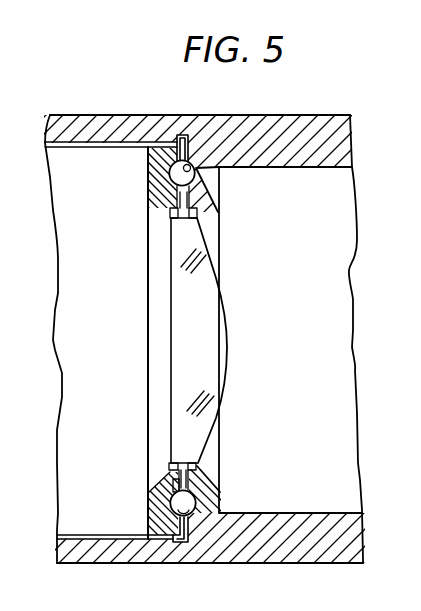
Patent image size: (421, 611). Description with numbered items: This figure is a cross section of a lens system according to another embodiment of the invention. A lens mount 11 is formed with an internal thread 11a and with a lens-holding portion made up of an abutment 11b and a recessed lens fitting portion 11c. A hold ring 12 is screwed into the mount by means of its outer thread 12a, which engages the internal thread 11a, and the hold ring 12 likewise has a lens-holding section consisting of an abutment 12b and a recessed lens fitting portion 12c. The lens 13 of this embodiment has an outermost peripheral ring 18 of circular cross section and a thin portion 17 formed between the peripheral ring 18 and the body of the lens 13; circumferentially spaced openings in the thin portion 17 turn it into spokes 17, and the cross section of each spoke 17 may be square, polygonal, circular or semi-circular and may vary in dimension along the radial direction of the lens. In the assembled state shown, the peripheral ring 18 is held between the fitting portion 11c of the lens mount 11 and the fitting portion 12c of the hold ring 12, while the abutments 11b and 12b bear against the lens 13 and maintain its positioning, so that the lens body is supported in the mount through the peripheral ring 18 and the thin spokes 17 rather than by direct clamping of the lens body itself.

The lens mount 11 is at (282, 143).
The internal thread 11a is at (78, 141).
The abutment 11b is at (181, 463).
The recessed lens fitting portion 11c is at (203, 150).
The hold ring 12 is at (158, 288).
The outer thread 12a is at (166, 146).
The abutment 12b is at (176, 219).
The recessed lens fitting portion 12c is at (201, 515).
The lens 13 is at (183, 330).
The thin portion 17 is at (173, 482).
The peripheral ring 18 is at (173, 137).